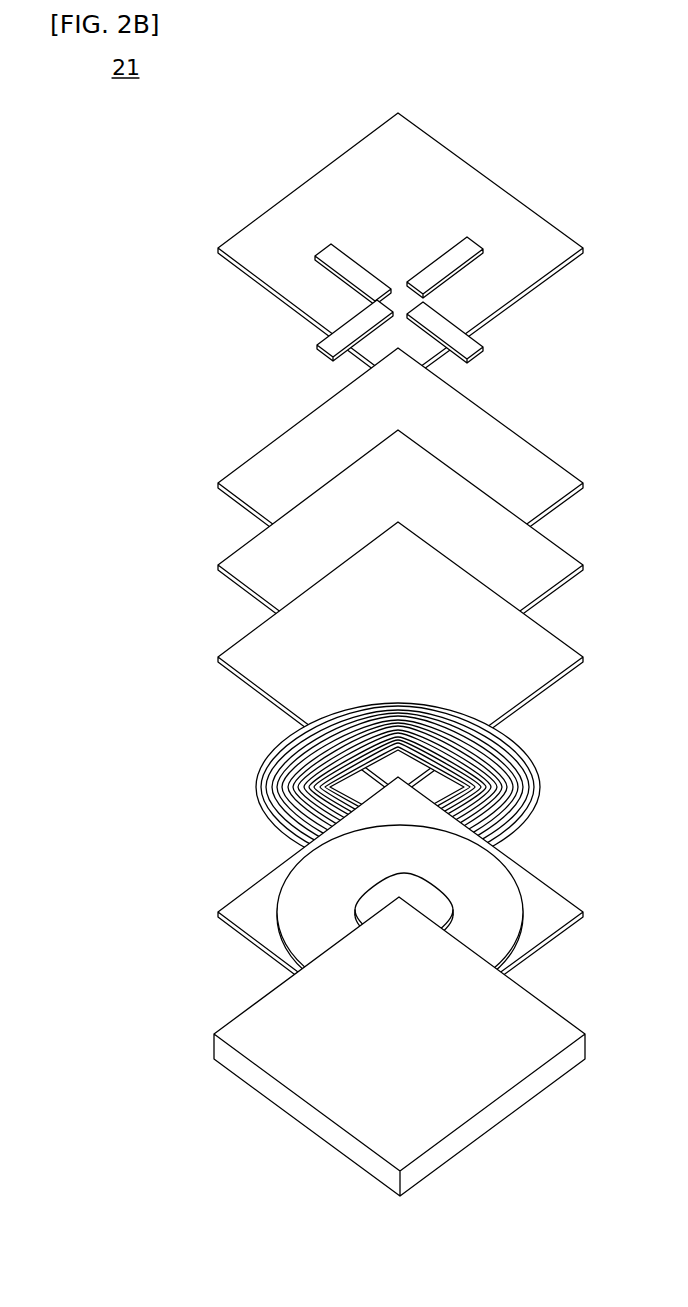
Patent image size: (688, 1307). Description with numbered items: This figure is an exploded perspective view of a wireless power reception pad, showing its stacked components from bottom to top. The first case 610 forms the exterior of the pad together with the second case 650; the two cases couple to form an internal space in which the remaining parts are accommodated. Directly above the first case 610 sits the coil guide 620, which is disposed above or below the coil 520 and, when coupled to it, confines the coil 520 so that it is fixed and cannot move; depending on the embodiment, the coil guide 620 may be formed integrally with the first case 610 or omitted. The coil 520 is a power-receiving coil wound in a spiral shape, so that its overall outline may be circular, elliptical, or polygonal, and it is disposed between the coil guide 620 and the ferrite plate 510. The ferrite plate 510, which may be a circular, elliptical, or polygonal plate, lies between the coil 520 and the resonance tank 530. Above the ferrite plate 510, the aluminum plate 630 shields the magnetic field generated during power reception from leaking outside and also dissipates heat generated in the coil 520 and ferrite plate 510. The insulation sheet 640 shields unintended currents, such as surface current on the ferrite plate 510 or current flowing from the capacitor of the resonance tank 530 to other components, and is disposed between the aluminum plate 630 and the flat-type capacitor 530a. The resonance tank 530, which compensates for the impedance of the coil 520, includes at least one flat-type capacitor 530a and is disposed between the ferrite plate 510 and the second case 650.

The second case 650 is at (318, 240).
The resonance tank 530 is at (292, 300).
The flat-type capacitor 530a is at (322, 352).
The aluminum plate 630 is at (292, 476).
The insulation sheet 640 is at (292, 568).
The ferrite plate 510 is at (292, 665).
The coil 520 is at (257, 778).
The coil guide 620 is at (303, 910).
The first case 610 is at (297, 1047).